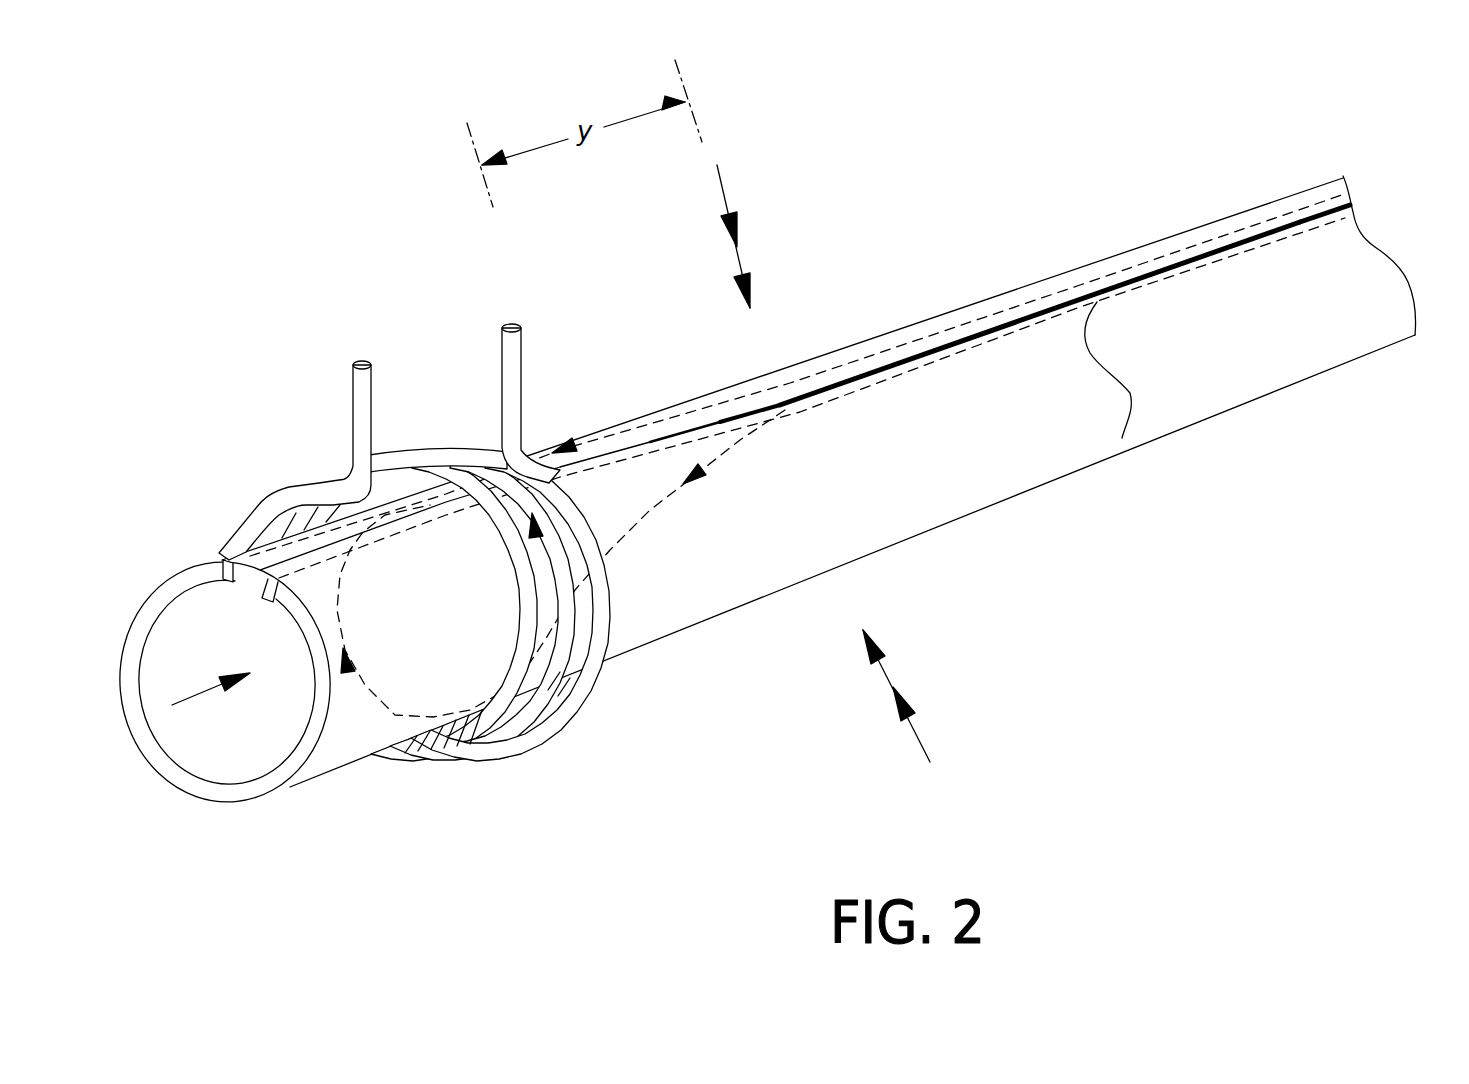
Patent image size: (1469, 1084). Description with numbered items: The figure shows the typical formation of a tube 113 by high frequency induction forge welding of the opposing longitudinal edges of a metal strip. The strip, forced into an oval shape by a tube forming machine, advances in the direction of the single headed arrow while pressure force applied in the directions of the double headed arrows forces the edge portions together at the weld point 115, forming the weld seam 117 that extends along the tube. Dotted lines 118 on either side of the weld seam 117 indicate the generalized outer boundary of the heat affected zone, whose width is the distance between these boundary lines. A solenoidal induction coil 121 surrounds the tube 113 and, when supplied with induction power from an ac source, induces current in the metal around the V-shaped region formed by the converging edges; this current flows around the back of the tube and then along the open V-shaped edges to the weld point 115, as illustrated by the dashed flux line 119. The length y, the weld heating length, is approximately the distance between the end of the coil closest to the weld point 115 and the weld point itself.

The tube 113 is at (977, 439).
The weld point 115 is at (777, 370).
The weld seam 117 is at (1376, 196).
The outer boundary lines of the heat affected zone 118 is at (1046, 303).
The flux line 119 is at (668, 636).
The induction coil 121 is at (363, 435).